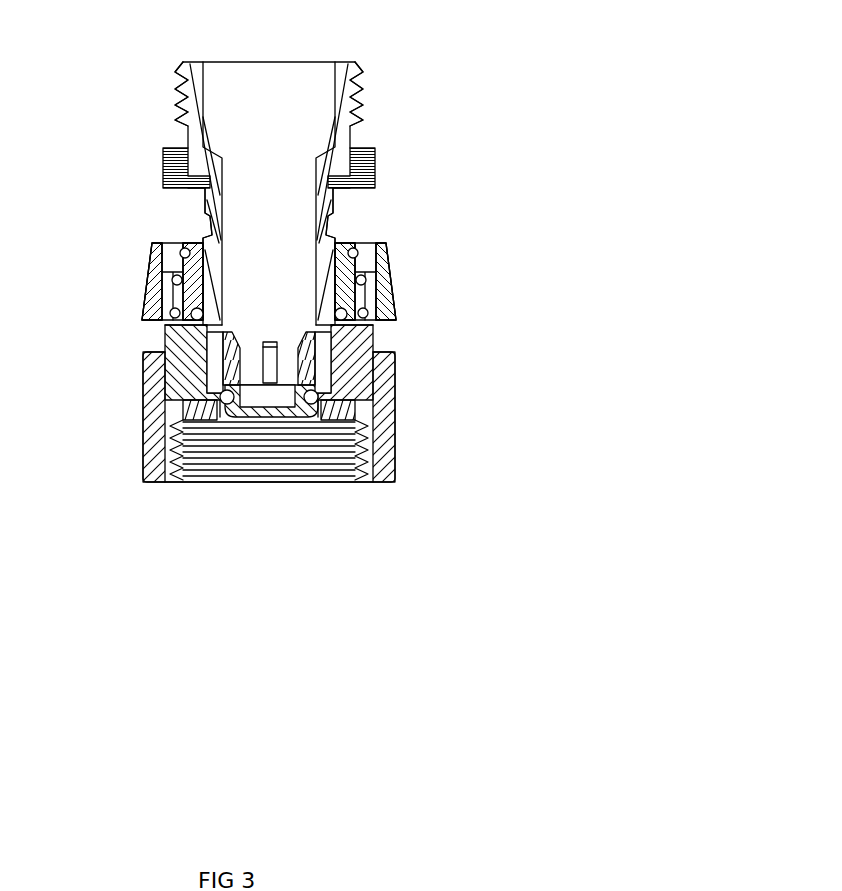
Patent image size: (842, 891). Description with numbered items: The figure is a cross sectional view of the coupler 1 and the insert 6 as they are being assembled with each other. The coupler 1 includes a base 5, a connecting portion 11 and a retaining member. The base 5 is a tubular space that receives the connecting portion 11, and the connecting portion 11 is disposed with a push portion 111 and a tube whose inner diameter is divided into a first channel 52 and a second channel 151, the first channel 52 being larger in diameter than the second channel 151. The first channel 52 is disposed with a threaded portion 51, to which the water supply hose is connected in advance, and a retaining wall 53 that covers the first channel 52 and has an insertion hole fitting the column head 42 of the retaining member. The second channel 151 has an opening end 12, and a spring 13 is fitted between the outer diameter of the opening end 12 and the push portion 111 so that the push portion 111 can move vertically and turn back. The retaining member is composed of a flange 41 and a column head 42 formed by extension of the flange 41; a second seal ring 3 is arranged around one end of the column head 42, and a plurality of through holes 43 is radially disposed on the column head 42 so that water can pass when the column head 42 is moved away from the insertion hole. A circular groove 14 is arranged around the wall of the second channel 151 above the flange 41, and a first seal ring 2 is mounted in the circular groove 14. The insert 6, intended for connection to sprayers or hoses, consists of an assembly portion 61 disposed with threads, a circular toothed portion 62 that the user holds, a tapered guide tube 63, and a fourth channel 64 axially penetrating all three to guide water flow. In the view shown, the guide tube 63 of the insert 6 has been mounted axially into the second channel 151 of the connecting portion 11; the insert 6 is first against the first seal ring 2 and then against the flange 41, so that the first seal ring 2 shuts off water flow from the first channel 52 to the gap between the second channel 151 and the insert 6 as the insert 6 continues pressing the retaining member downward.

The coupler 1 is at (445, 297).
The first seal ring 2 is at (190, 318).
The second seal ring 3 is at (322, 397).
The base 5 is at (387, 445).
The insert 6 is at (384, 64).
The connecting portion 11 is at (124, 267).
The opening end 12 is at (198, 240).
The spring 13 is at (366, 297).
The circular groove 14 is at (172, 338).
The flange 41 is at (333, 333).
The column head 42 is at (352, 479).
The through holes 43 is at (314, 375).
The threaded portion 51 is at (193, 463).
The first channel 52 is at (296, 488).
The retaining wall 53 is at (219, 425).
The assembly portion 61 is at (180, 93).
The circular toothed portion 62 is at (165, 153).
The guide tube 63 is at (336, 242).
The fourth channel 64 is at (290, 167).
The push portion 111 is at (150, 289).
The second channel 151 is at (228, 402).